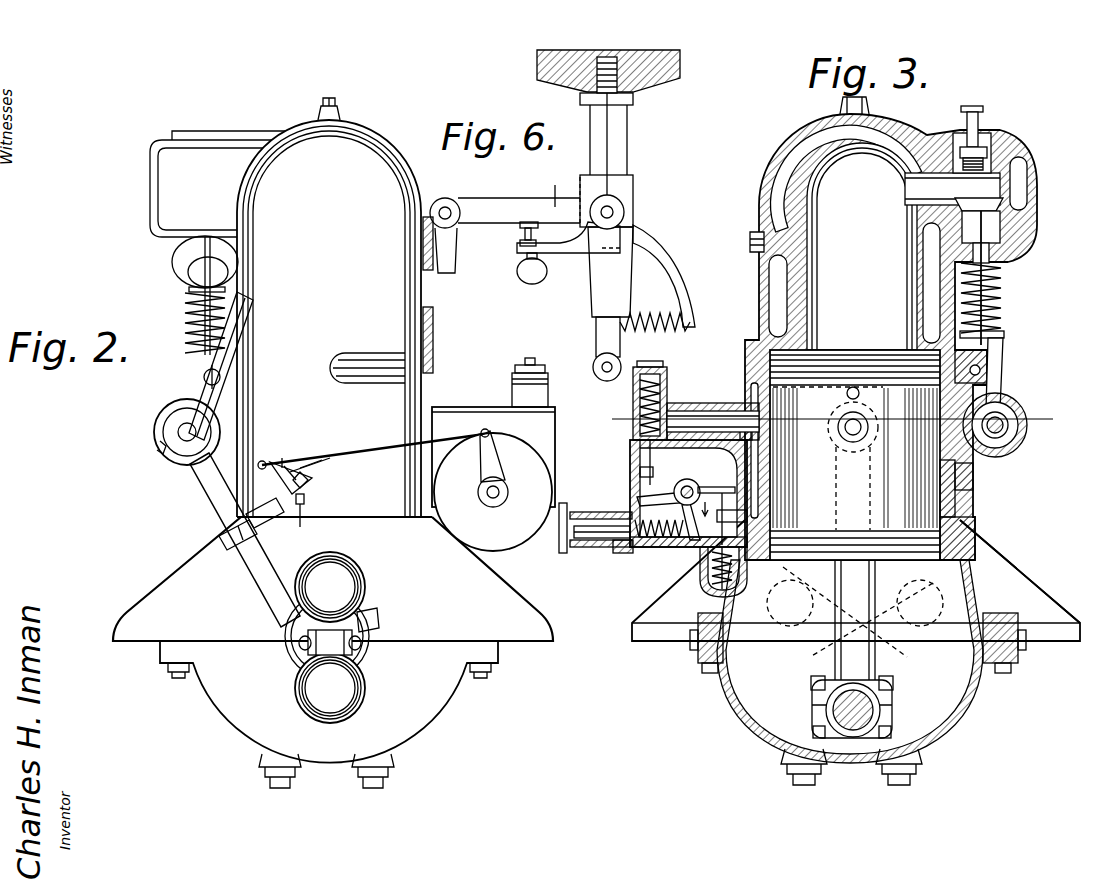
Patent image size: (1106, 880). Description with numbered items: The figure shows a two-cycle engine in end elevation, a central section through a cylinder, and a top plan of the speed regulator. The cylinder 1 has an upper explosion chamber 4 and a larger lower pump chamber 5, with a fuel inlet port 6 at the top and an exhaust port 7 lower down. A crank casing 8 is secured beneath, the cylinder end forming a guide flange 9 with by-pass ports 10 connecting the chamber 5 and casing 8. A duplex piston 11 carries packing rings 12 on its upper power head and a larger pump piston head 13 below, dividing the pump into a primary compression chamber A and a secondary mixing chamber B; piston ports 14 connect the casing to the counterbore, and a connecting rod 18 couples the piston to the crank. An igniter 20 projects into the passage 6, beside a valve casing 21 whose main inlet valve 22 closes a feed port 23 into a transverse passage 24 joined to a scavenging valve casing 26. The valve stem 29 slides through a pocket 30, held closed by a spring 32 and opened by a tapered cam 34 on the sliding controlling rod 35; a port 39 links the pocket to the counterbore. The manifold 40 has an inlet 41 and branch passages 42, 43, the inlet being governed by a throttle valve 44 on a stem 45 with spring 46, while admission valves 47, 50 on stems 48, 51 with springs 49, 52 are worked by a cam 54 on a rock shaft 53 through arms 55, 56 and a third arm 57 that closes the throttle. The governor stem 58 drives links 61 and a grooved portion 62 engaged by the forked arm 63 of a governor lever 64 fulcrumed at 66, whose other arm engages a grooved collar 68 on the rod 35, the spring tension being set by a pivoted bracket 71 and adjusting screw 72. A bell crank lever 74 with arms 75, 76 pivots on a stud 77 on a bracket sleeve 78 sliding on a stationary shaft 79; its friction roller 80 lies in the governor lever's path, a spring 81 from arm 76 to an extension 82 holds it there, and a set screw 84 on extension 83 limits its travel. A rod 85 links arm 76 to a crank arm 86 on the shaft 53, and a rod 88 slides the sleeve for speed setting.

In FIG. 2, the cylinder 1 is at (358, 305).
In FIG. 3, the cylinder 1 is at (759, 265).
In FIG. 3, the explosion chamber 4 is at (831, 338).
In FIG. 3, the pump chamber 5 is at (955, 474).
In FIG. 3, the fuel inlet port 6 is at (920, 188).
In FIG. 2, the exhaust port 7 is at (433, 345).
In FIG. 3, the exhaust port 7 is at (759, 335).
In FIG. 2, the crank casing 8 is at (420, 705).
In FIG. 3, the crank casing 8 is at (965, 708).
In FIG. 3, the guide flange 9 is at (970, 552).
In FIG. 3, the by-pass ports 10 is at (958, 530).
In FIG. 3, the duplex piston 11 is at (855, 455).
In FIG. 3, the packing rings 12 is at (840, 358).
In FIG. 3, the pump piston head 13 is at (802, 562).
In FIG. 3, the piston ports 14 is at (848, 394).
In FIG. 3, the connecting rod 18 is at (833, 642).
In FIG. 3, the igniter 20 is at (981, 150).
In FIG. 2, the valve casing 21 is at (217, 184).
In FIG. 3, the main inlet valve 22 is at (1003, 199).
In FIG. 3, the feed port 23 is at (984, 206).
In FIG. 3, the transverse passage 24 is at (998, 230).
In FIG. 2, the scavenging valve casing 26 is at (190, 256).
In FIG. 2, the valve stem 29 is at (186, 318).
In FIG. 3, the valve stem 29 is at (1005, 282).
In FIG. 2, the chamber or pocket 30 is at (168, 410).
In FIG. 3, the chamber or pocket 30 is at (1004, 374).
In FIG. 2, the valve spring 32 is at (189, 296).
In FIG. 3, the valve spring 32 is at (1007, 318).
In FIG. 3, the tapered cam 34 is at (1018, 428).
In FIG. 2, the controlling rod 35 is at (183, 431).
In FIG. 3, the controlling rod 35 is at (1004, 435).
In FIG. 3, the port 39 is at (1003, 343).
In FIG. 3, the manifold 40 is at (634, 430).
In FIG. 3, the inlet 41 is at (584, 548).
In FIG. 3, the branch passage 42 is at (684, 408).
In FIG. 3, the branch passage 43 is at (700, 555).
In FIG. 3, the throttle valve 44 is at (628, 550).
In FIG. 3, the throttle valve stem 45 is at (600, 526).
In FIG. 3, the throttle spring 46 is at (650, 547).
In FIG. 3, the admission valve 47 is at (666, 404).
In FIG. 3, the valve stem 48 is at (640, 455).
In FIG. 3, the spring 49 is at (640, 388).
In FIG. 3, the admission valve 50 is at (802, 548).
In FIG. 3, the valve stem 51 is at (778, 562).
In FIG. 3, the coiled spring 52 is at (716, 565).
In FIG. 2, the rock shaft 53 is at (494, 500).
In FIG. 3, the rock shaft 53 is at (689, 486).
In FIG. 3, the cam 54 is at (737, 424).
In FIG. 3, the cam arm 55 is at (653, 480).
In FIG. 3, the cam arm 56 is at (700, 493).
In FIG. 3, the third cam arm 57 is at (683, 514).
In FIG. 2, the governor stem 58 is at (330, 640).
In FIG. 2, the links 61 is at (303, 645).
In FIG. 2, the grooved portion 62 is at (359, 646).
In FIG. 2, the forked arm 63 is at (288, 613).
In FIG. 2, the governor lever 64 is at (230, 498).
In FIG. 2, the fulcrum 66 is at (236, 540).
In FIG. 2, the grooved collar 68 is at (163, 449).
In FIG. 2, the pivoted bracket 71 is at (242, 333).
In FIG. 2, the adjusting screw 72 is at (221, 377).
In FIG. 2, the bell crank lever 74 is at (282, 461).
In FIG. 6, the bell crank lever 74 is at (548, 182).
In FIG. 6, the lever arm 75 is at (503, 189).
In FIG. 6, the lever arm 76 is at (612, 300).
In FIG. 6, the stud 77 is at (616, 212).
In FIG. 2, the bracket sleeve 78 is at (312, 479).
In FIG. 6, the bracket sleeve 78 is at (628, 188).
In FIG. 2, the stationary shaft 79 is at (306, 484).
In FIG. 6, the stationary shaft 79 is at (619, 146).
In FIG. 2, the friction roller 80 is at (228, 470).
In FIG. 6, the friction roller 80 is at (450, 189).
In FIG. 2, the spring 81 is at (304, 462).
In FIG. 6, the spring 81 is at (645, 330).
In FIG. 2, the sleeve extension 82 is at (296, 468).
In FIG. 6, the sleeve extension 82 is at (665, 268).
In FIG. 2, the sleeve extension 83 is at (290, 465).
In FIG. 6, the sleeve extension 83 is at (571, 254).
In FIG. 2, the set screw 84 is at (284, 476).
In FIG. 6, the set screw 84 is at (522, 234).
In FIG. 2, the rod 85 is at (350, 446).
In FIG. 2, the crank arm 86 is at (486, 464).
In FIG. 2, the rod 88 is at (300, 510).
In FIG. 3, the primary compression chamber A is at (777, 630).
In FIG. 3, the secondary mixing and compression chamber B is at (960, 503).